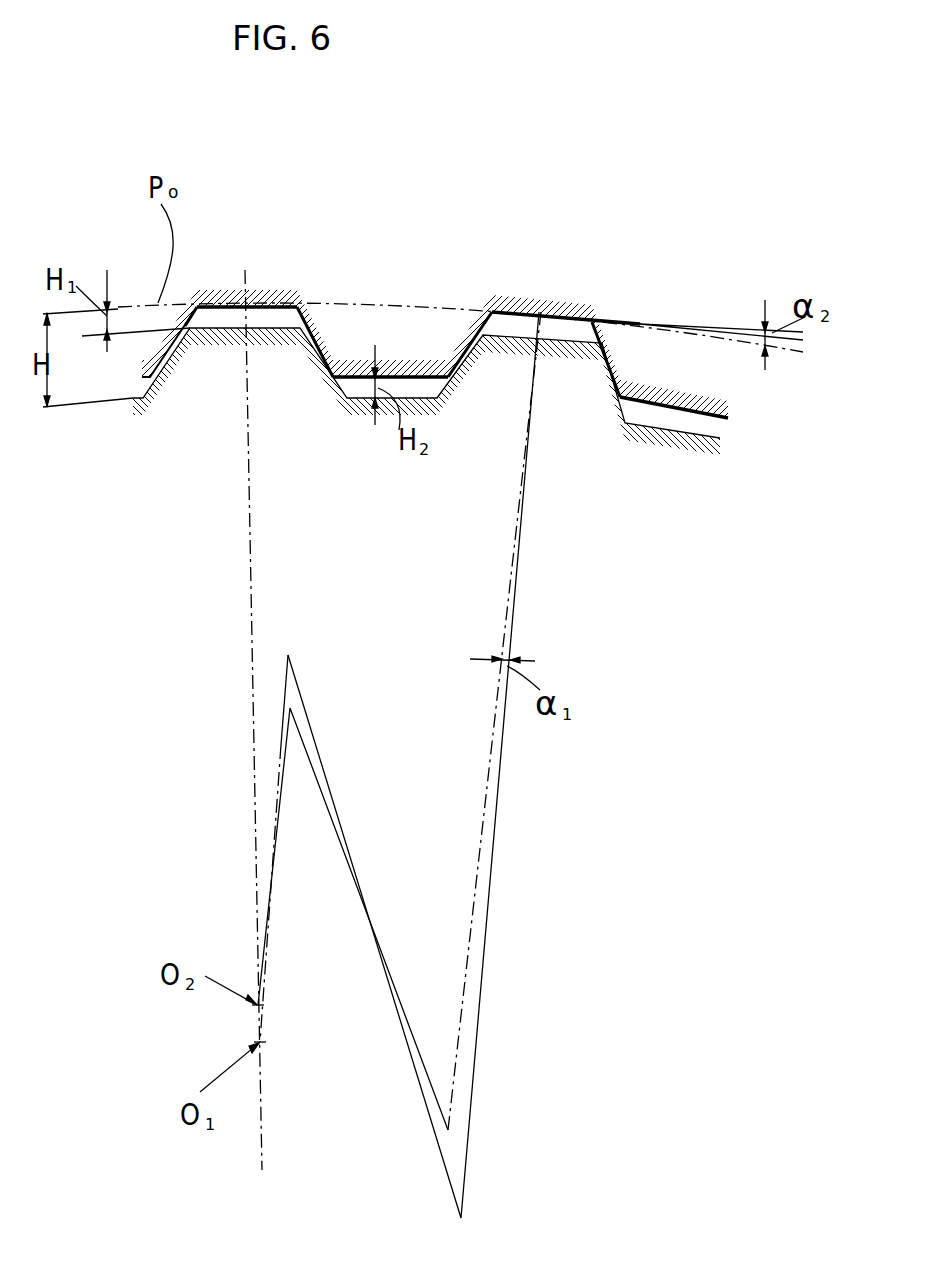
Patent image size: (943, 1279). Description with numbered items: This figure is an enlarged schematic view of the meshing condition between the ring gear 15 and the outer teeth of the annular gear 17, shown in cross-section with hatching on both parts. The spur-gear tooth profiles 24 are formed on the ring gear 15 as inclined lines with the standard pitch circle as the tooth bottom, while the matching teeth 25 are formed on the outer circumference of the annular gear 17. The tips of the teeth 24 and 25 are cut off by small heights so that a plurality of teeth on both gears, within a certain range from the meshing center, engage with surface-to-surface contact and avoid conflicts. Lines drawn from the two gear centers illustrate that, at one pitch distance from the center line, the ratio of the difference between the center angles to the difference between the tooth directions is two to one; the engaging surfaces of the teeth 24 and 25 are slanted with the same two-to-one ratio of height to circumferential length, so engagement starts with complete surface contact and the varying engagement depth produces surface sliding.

The ring gear 15 is at (256, 212).
The annular gear 17 is at (180, 490).
The spur-gear tooth profiles 24 is at (402, 357).
The teeth 25 is at (277, 360).